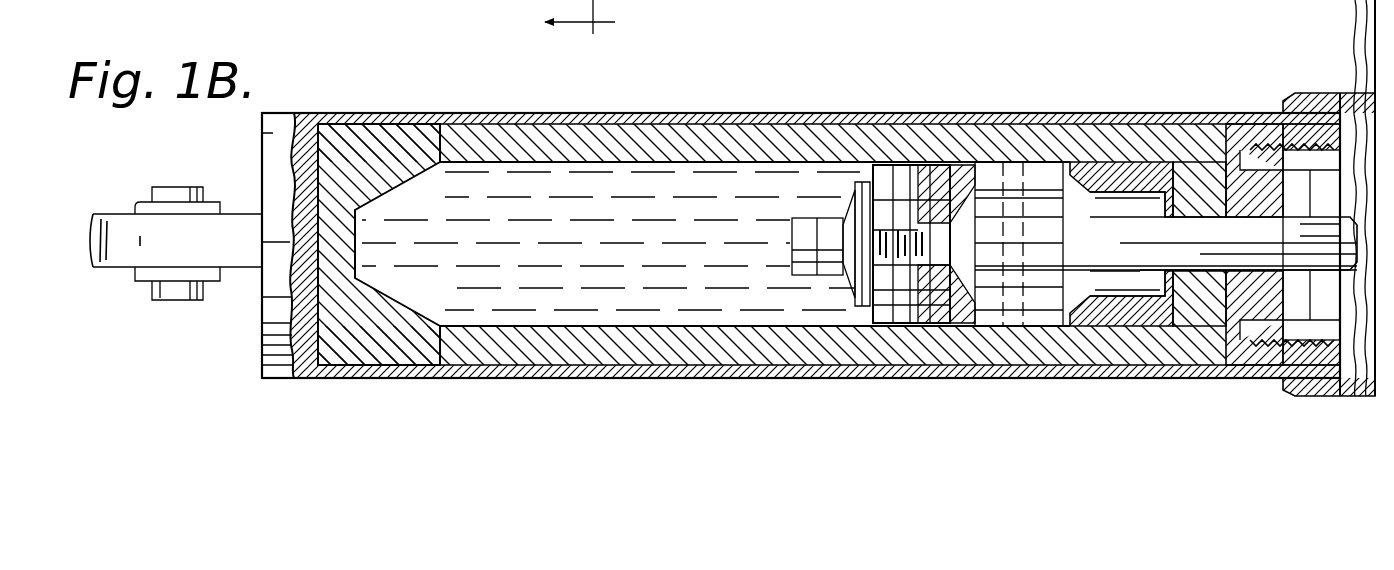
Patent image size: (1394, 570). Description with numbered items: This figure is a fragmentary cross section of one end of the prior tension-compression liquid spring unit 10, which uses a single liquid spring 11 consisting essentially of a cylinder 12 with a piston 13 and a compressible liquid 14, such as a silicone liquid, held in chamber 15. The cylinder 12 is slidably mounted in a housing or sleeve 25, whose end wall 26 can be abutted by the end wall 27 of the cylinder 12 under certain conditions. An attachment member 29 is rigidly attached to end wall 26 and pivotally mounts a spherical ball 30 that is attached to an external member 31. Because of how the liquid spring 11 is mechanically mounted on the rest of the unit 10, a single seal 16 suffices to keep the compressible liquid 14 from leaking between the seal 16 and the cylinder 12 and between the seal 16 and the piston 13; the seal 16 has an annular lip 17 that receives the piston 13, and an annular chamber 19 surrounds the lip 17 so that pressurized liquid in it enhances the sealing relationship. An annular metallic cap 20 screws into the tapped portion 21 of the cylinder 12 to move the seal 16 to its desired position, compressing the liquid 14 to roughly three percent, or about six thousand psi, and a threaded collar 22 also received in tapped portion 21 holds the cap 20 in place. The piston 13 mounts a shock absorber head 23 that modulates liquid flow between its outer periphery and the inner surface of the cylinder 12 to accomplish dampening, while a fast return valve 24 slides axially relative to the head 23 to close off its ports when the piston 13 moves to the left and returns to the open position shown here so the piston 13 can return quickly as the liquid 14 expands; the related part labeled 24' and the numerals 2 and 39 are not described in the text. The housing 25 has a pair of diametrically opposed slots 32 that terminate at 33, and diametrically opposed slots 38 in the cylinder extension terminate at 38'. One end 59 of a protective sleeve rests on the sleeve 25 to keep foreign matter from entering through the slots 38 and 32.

The section line arrow 2 is at (592, 17).
The reference numeral 39 is at (459, 10).
The liquid spring unit 10 is at (1099, 97).
The liquid spring 11 is at (544, 380).
The cylinder 12 is at (655, 350).
The piston 13 is at (1035, 282).
The compressible liquid 14 is at (410, 300).
The chamber 15 is at (548, 172).
The seal 16 is at (1055, 125).
The annular lip 17 is at (1140, 217).
The annular chamber 19 is at (1140, 300).
The annular metallic cap 20 is at (1196, 125).
The tapped portion 21 is at (1238, 243).
The threaded collar 22 is at (1266, 144).
The shock absorber head 23 is at (896, 165).
The fast return valve 24 is at (834, 193).
The seal retainer 24' is at (885, 168).
The housing or sleeve 25 is at (822, 379).
The end wall 26 is at (275, 132).
The end wall 27 is at (300, 188).
The attachment member 29 is at (92, 258).
The spherical ball 30 is at (140, 205).
The external member 31 is at (170, 302).
The slots 32 is at (1365, 397).
The slot termination 33 is at (1340, 93).
The slots 38 is at (1324, 244).
The slot termination 38' is at (1320, 243).
The end of protective sleeve 59 is at (1286, 93).